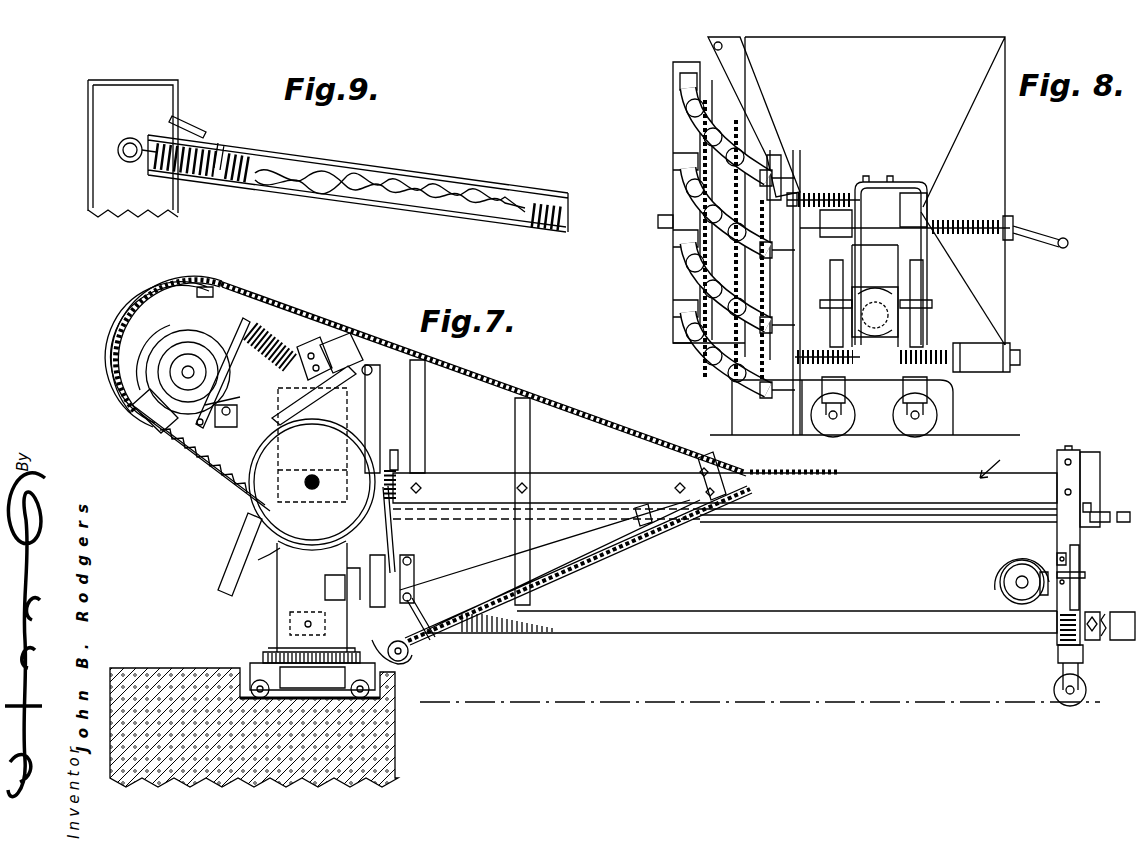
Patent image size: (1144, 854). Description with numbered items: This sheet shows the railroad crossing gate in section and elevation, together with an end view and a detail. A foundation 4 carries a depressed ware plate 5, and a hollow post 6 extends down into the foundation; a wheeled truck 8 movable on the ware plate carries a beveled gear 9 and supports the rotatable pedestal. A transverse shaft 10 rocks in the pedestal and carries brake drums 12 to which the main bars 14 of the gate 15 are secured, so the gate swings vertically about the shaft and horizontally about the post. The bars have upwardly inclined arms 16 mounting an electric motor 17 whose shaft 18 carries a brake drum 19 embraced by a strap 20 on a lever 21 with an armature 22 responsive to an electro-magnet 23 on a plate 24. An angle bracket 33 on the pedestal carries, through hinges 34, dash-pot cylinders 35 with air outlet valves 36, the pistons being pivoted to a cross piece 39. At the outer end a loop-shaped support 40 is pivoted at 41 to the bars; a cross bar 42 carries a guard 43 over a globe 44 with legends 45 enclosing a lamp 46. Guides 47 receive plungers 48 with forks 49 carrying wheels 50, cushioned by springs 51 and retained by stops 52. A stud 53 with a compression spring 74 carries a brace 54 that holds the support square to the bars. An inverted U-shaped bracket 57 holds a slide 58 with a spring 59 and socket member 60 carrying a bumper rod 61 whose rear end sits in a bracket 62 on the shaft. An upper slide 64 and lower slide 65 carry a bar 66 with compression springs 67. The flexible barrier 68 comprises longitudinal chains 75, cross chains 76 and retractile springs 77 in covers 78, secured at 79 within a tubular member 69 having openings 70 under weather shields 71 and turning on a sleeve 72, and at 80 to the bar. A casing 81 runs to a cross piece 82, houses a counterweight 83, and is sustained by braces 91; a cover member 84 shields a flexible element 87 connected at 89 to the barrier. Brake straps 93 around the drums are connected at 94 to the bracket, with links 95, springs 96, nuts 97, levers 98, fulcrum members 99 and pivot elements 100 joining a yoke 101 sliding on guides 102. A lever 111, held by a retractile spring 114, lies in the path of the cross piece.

In FIG. 7, the foundation 4 is at (390, 742).
In FIG. 7, the ware plate 5 is at (397, 692).
In FIG. 7, the hollow post 6 is at (313, 709).
In FIG. 7, the wheeled truck 8 is at (250, 669).
In FIG. 7, the beveled gear 9 is at (263, 655).
In FIG. 7, the transverse shaft 10 is at (334, 476).
In FIG. 8, the transverse shaft 10 is at (660, 222).
In FIG. 7, the brake drums 12 is at (312, 582).
In FIG. 7, the main bars 14 is at (896, 498).
In FIG. 8, the main bars 14 is at (903, 214).
In FIG. 7, the gate 15 is at (990, 460).
In FIG. 7, the upwardly inclined arms 16 is at (234, 433).
In FIG. 7, the electric motor 17 is at (158, 347).
In FIG. 7, the motor shaft 18 is at (182, 372).
In FIG. 7, the brake drum 19 is at (196, 381).
In FIG. 7, the strap 20 is at (212, 322).
In FIG. 7, the lever 21 is at (207, 413).
In FIG. 7, the armature 22 is at (248, 318).
In FIG. 7, the electro-magnet 23 is at (283, 336).
In FIG. 7, the plate 24 is at (314, 352).
In FIG. 7, the angle bracket 33 is at (355, 597).
In FIG. 7, the hinges 34 is at (393, 643).
In FIG. 7, the cushioning dash-pot cylinders 35 is at (590, 545).
In FIG. 7, the adjustable air outlet valves 36 is at (422, 616).
In FIG. 7, the cross piece 39 is at (732, 480).
In FIG. 7, the loop-shaped support 40 is at (1058, 535).
In FIG. 8, the loop-shaped support 40 is at (900, 259).
In FIG. 7, the pivot 41 is at (1064, 493).
In FIG. 8, the pivot 41 is at (838, 222).
In FIG. 8, the cross bar 42 is at (876, 300).
In FIG. 7, the overhanging guard 43 is at (1008, 560).
In FIG. 7, the globe 44 is at (1008, 597).
In FIG. 7, the legends 45 is at (1030, 604).
In FIG. 7, the electric lamp 46 is at (995, 587).
In FIG. 7, the guides 47 is at (1081, 592).
In FIG. 8, the guides 47 is at (829, 303).
In FIG. 7, the plungers 48 is at (1080, 548).
In FIG. 8, the plungers 48 is at (836, 258).
In FIG. 7, the forks 49 is at (1084, 667).
In FIG. 8, the forks 49 is at (902, 394).
In FIG. 7, the wheels 50 is at (1068, 703).
In FIG. 8, the wheels 50 is at (907, 430).
In FIG. 7, the cushioning springs 51 is at (1060, 642).
In FIG. 8, the cushioning springs 51 is at (835, 360).
In FIG. 7, the stops 52 is at (1080, 563).
In FIG. 8, the stops 52 is at (830, 287).
In FIG. 7, the stud 53 is at (1100, 620).
In FIG. 8, the stud 53 is at (937, 347).
In FIG. 7, the brace 54 is at (760, 612).
In FIG. 8, the brace 54 is at (1002, 345).
In FIG. 7, the inverted U-shaped bracket 57 is at (1093, 478).
In FIG. 8, the inverted U-shaped bracket 57 is at (915, 183).
In FIG. 8, the slide 58 is at (1013, 224).
In FIG. 8, the compression spring 59 is at (968, 222).
In FIG. 7, the socket member 60 is at (1092, 514).
In FIG. 8, the socket member 60 is at (1018, 236).
In FIG. 7, the rod 61 is at (949, 523).
In FIG. 8, the rod 61 is at (1045, 250).
In FIG. 8, the bracket 62 is at (1069, 243).
In FIG. 8, the upper slide 64 is at (836, 195).
In FIG. 8, the lower slide 65 is at (790, 392).
In FIG. 8, the bar 66 is at (803, 190).
In FIG. 8, the compression springs 67 is at (813, 190).
In FIG. 8, the flexible barrier 68 is at (690, 132).
In FIG. 9, the tubular member 69 is at (144, 80).
In FIG. 8, the openings 70 is at (682, 92).
In FIG. 9, the openings 70 is at (172, 128).
In FIG. 8, the weather shields 71 is at (680, 73).
In FIG. 9, the weather shields 71 is at (199, 126).
In FIG. 7, the sleeve 72 is at (305, 471).
In FIG. 8, the compression spring 74 is at (962, 345).
In FIG. 9, the longitudinal chains 75 is at (450, 178).
In FIG. 8, the cross chains 76 is at (700, 330).
In FIG. 9, the retractile springs 77 is at (240, 150).
In FIG. 8, the covers 78 is at (770, 157).
In FIG. 9, the covers 78 is at (516, 189).
In FIG. 9, the spring securing point 79 is at (120, 160).
In FIG. 8, the spring securing point 80 is at (778, 257).
In FIG. 7, the metal casing 81 is at (551, 390).
In FIG. 8, the metal casing 81 is at (875, 197).
In FIG. 7, the cross piece 82 is at (150, 430).
In FIG. 7, the counterweight 83 is at (177, 283).
In FIG. 8, the U-shaped cover member 84 is at (749, 72).
In FIG. 8, the flexible element 87 is at (712, 62).
In FIG. 8, the connection 89 is at (720, 283).
In FIG. 7, the braces 91 is at (426, 421).
In FIG. 7, the brake straps 93 is at (271, 549).
In FIG. 7, the strap connection 94 is at (326, 578).
In FIG. 7, the links 95 is at (399, 456).
In FIG. 7, the compression springs 96 is at (398, 492).
In FIG. 7, the adjusting nuts 97 is at (399, 470).
In FIG. 7, the levers 98 is at (395, 566).
In FIG. 7, the fulcrum members 99 is at (415, 580).
In FIG. 7, the pivot elements 100 is at (368, 574).
In FIG. 7, the inverted U-shaped yoke 101 is at (380, 414).
In FIG. 7, the guides 102 is at (346, 531).
In FIG. 7, the lever 111 is at (238, 542).
In FIG. 7, the retractile spring 114 is at (210, 472).